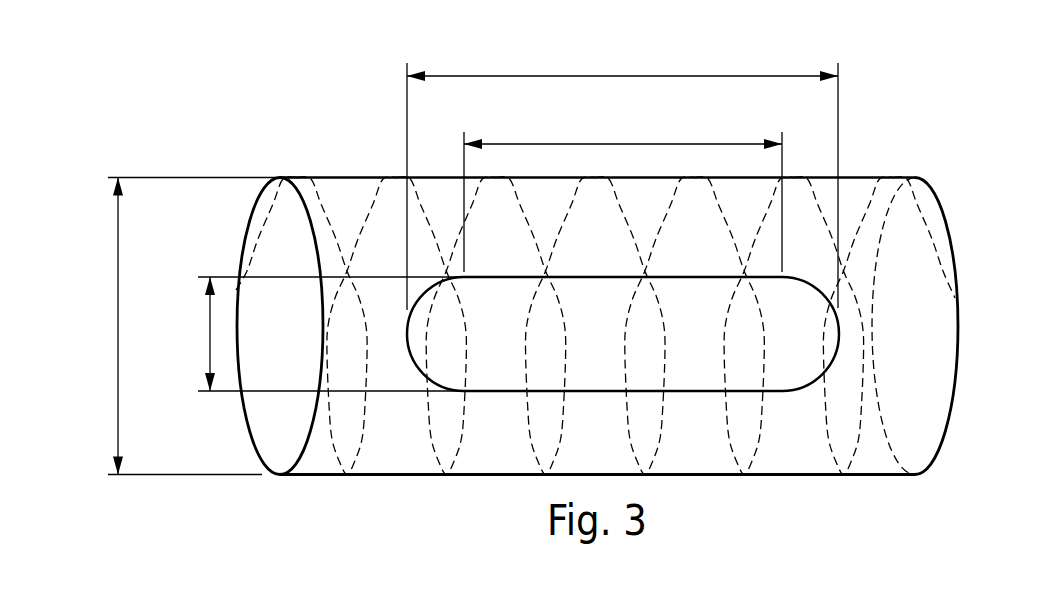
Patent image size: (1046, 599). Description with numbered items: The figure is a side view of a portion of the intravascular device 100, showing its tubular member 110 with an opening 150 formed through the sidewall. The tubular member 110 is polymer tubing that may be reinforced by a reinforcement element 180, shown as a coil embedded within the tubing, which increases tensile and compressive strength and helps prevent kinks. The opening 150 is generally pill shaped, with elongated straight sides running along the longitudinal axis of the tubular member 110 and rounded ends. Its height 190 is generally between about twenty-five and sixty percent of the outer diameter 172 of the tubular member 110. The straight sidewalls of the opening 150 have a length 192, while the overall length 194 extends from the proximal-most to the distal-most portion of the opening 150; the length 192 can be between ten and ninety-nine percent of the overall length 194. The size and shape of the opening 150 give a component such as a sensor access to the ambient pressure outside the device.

The intravascular device 100 is at (597, 305).
The tubular member 110 is at (397, 477).
The opening 150 is at (608, 393).
The outer diameter 172 is at (118, 328).
The reinforcement element 180 is at (893, 176).
The height 190 is at (210, 333).
The length 192 is at (623, 144).
The overall length 194 is at (623, 76).